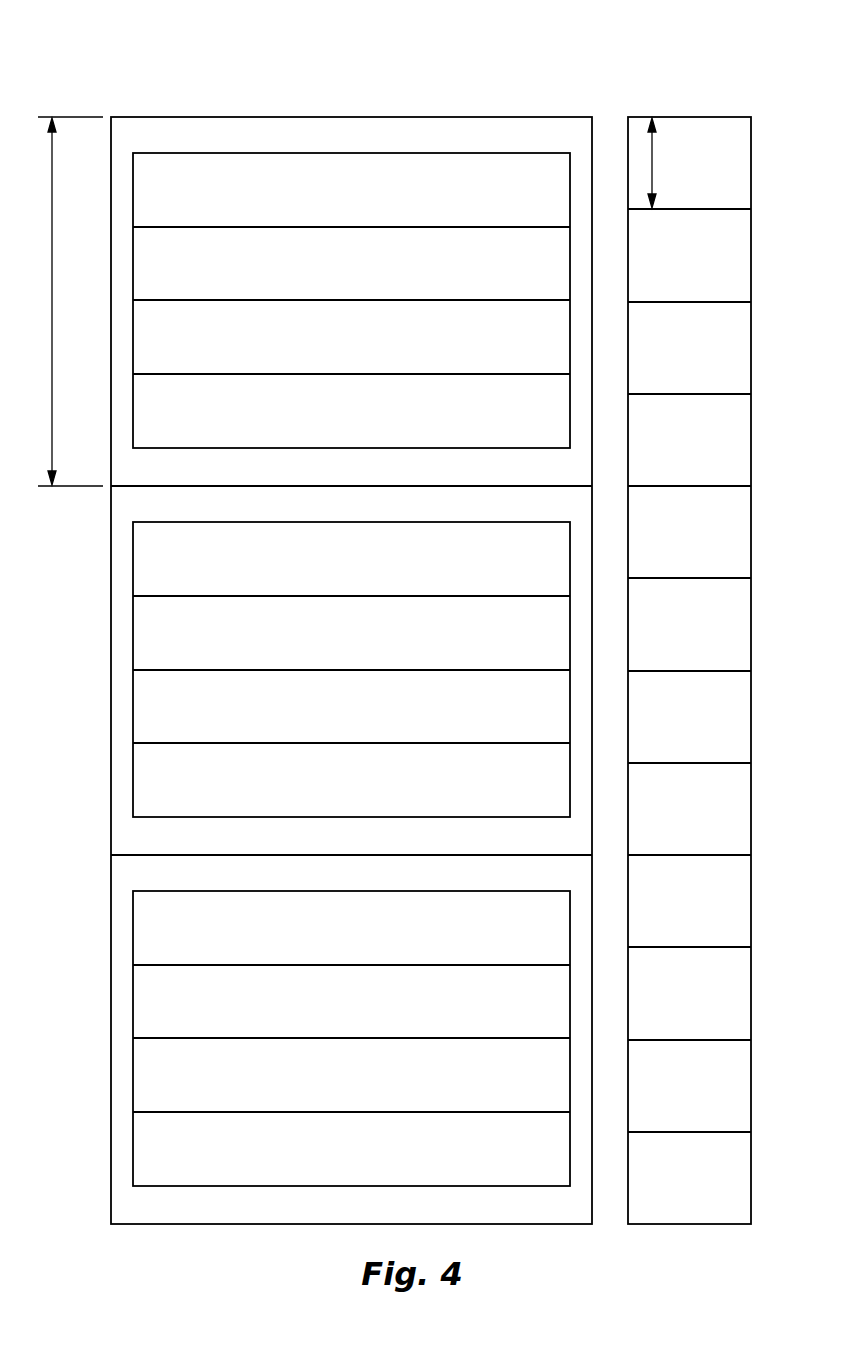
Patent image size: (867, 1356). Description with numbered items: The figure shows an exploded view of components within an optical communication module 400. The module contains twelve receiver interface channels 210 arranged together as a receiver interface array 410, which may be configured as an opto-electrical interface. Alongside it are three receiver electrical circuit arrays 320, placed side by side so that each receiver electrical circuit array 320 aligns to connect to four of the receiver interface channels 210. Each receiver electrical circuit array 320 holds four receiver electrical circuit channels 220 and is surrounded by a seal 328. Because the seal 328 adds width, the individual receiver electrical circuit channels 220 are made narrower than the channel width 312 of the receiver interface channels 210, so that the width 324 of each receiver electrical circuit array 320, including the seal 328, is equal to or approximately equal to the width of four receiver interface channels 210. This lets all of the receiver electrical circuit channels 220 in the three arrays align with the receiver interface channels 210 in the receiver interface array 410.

The optical communication module 400 is at (114, 56).
The receiver electrical circuit array 320 is at (252, 117).
The seal 328 is at (367, 131).
The width of the receiver electrical circuit array 324 is at (69, 301).
The receiver electrical circuit channel 220 is at (351, 670).
The channel width of the receiver interface channel 312 is at (654, 150).
The receiver interface channel 210 is at (689, 672).
The receiver interface array 410 is at (697, 1224).